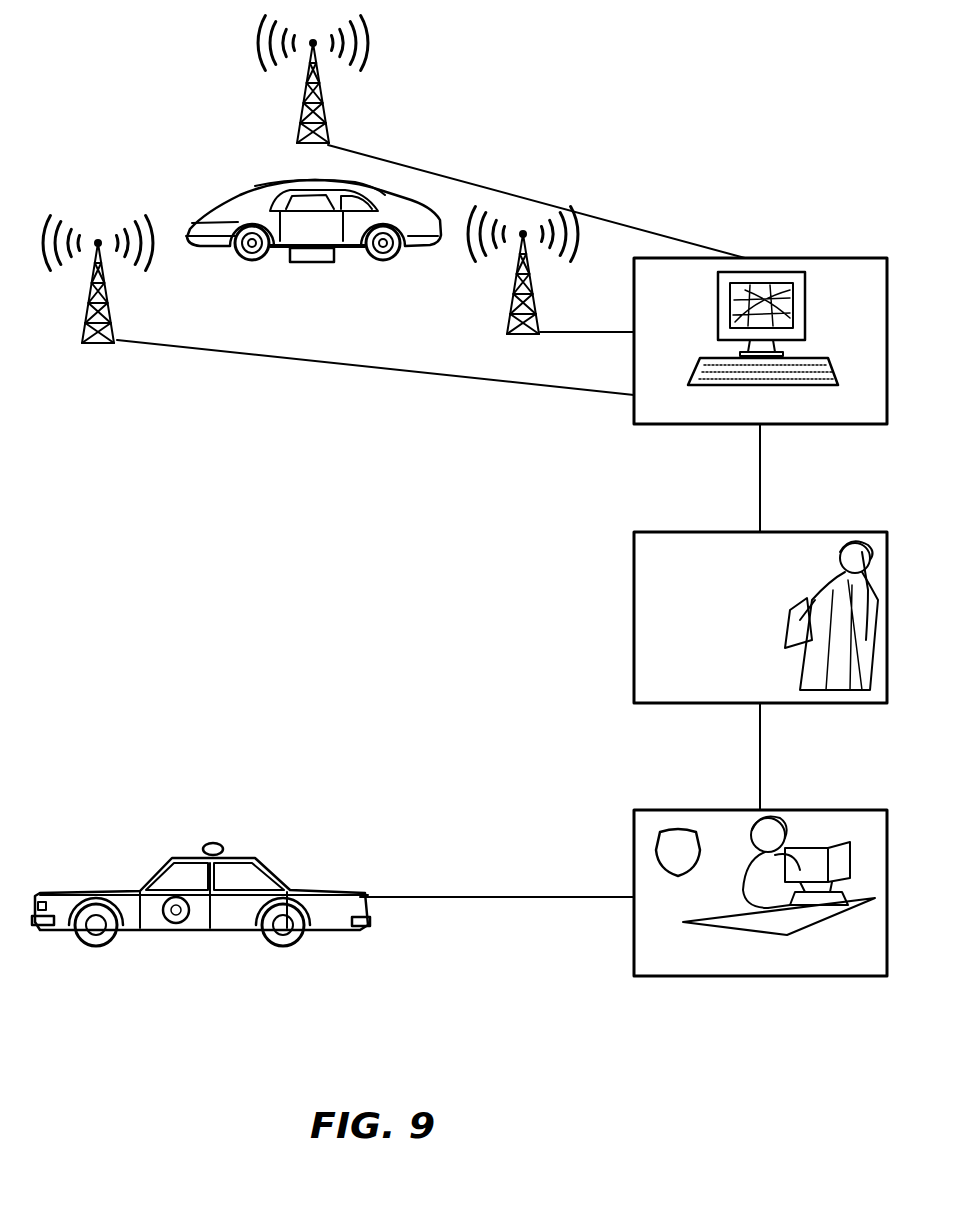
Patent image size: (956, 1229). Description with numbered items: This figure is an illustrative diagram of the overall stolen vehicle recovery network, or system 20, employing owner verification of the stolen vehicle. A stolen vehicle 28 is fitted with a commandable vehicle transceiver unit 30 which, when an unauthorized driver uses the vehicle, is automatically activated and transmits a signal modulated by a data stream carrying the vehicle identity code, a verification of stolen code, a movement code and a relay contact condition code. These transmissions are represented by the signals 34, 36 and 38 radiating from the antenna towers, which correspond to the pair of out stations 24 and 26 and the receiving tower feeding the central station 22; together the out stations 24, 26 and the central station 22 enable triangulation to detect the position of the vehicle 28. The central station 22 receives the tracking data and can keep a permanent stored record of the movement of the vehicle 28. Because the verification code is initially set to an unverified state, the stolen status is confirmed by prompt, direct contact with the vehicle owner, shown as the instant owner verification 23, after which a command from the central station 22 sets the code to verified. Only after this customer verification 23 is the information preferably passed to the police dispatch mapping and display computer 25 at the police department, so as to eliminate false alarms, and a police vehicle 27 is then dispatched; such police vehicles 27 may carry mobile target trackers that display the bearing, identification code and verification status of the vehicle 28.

The stolen vehicle recovery system 20 is at (506, 162).
The central station 22 is at (857, 266).
The owner verification 23 is at (835, 540).
The out station 24 is at (336, 80).
The police dispatch mapping and display computer 25 is at (845, 795).
The out station 26 is at (95, 263).
The police vehicle 27 is at (345, 865).
The vehicle 28 is at (313, 255).
The vehicle transceiver unit 30 is at (340, 258).
The transmitted signal 34 is at (365, 62).
The transmitted signal 36 is at (578, 246).
The transmitted signal 38 is at (172, 208).